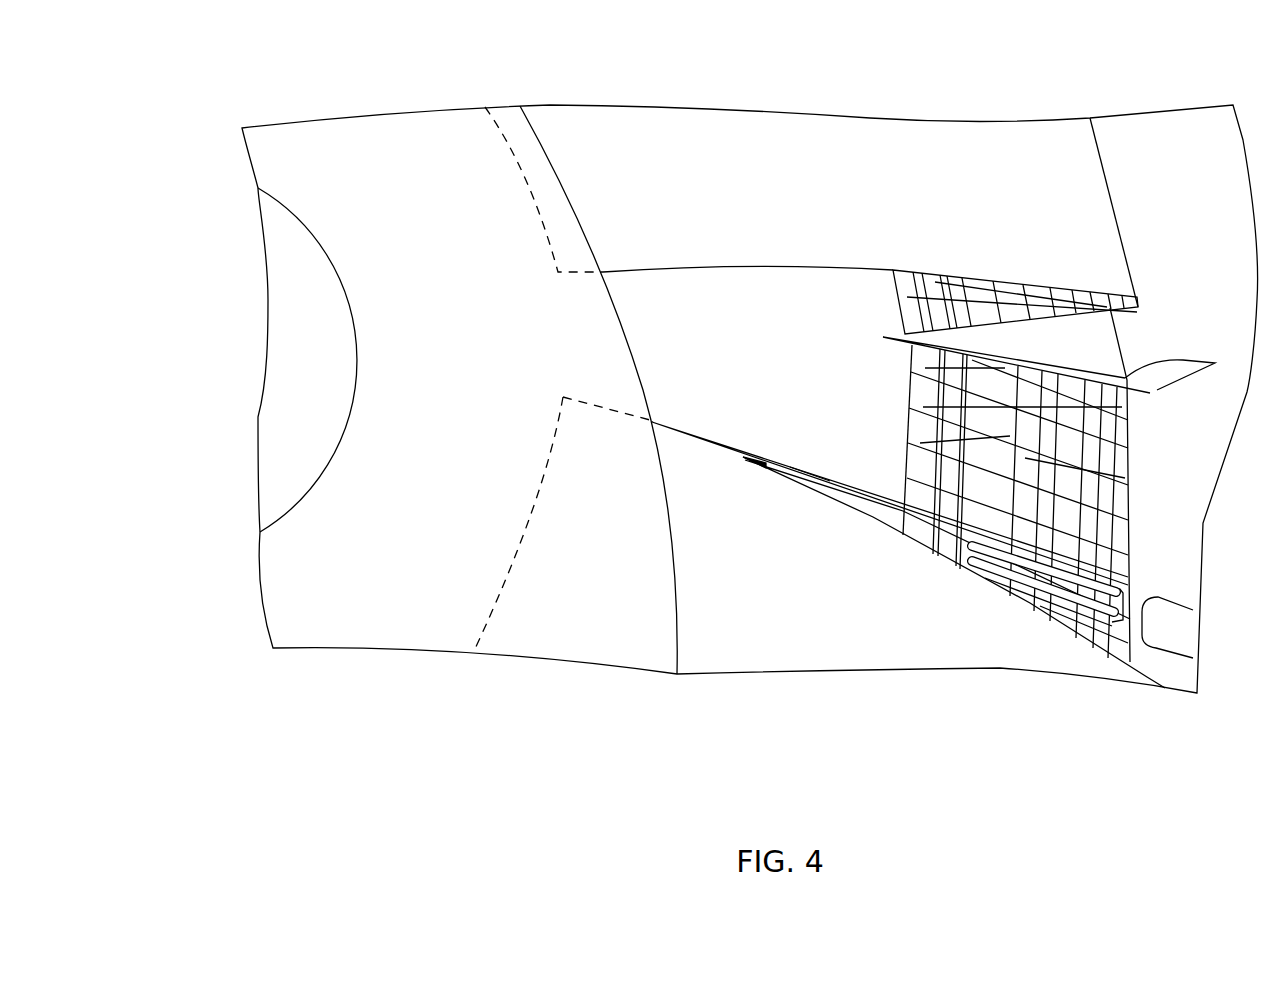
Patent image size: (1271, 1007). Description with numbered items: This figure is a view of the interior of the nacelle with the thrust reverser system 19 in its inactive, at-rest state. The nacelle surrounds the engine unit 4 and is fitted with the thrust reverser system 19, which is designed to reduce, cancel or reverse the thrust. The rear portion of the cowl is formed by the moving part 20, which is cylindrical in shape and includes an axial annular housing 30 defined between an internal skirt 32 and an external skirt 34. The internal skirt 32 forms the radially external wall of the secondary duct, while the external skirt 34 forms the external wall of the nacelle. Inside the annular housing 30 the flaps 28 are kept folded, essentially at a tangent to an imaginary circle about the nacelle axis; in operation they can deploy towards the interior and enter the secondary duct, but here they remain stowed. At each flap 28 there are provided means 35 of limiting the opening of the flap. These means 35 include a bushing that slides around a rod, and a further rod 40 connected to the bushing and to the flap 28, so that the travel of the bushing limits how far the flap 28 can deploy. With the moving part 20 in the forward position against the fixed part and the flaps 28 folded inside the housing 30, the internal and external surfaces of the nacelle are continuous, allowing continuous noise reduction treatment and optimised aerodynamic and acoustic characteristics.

The engine unit 4 is at (397, 603).
The thrust reverser system 19 is at (867, 300).
The moving part 20 is at (753, 187).
The flap 28 is at (977, 460).
The axial annular housing 30 is at (873, 503).
The internal skirt 32 is at (813, 513).
The external skirt 34 is at (830, 482).
The means of limiting the opening of the flaps 35 is at (1003, 590).
The rod 40 is at (1055, 590).